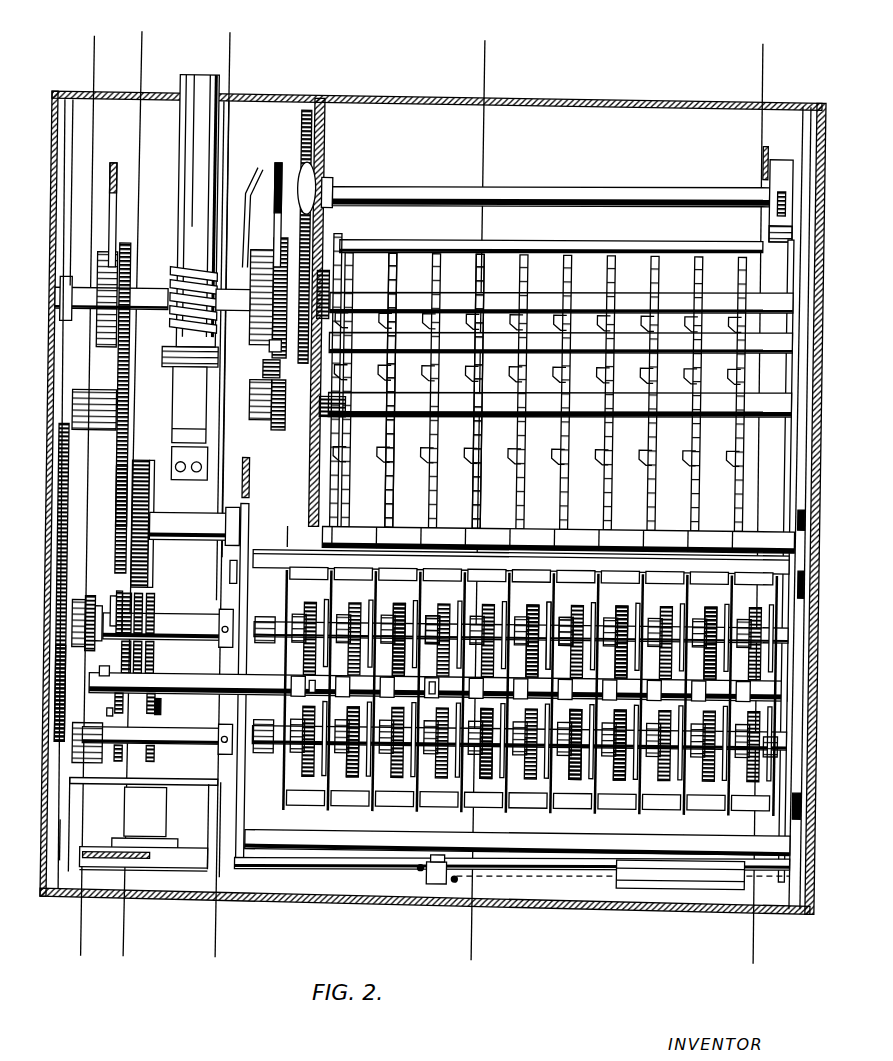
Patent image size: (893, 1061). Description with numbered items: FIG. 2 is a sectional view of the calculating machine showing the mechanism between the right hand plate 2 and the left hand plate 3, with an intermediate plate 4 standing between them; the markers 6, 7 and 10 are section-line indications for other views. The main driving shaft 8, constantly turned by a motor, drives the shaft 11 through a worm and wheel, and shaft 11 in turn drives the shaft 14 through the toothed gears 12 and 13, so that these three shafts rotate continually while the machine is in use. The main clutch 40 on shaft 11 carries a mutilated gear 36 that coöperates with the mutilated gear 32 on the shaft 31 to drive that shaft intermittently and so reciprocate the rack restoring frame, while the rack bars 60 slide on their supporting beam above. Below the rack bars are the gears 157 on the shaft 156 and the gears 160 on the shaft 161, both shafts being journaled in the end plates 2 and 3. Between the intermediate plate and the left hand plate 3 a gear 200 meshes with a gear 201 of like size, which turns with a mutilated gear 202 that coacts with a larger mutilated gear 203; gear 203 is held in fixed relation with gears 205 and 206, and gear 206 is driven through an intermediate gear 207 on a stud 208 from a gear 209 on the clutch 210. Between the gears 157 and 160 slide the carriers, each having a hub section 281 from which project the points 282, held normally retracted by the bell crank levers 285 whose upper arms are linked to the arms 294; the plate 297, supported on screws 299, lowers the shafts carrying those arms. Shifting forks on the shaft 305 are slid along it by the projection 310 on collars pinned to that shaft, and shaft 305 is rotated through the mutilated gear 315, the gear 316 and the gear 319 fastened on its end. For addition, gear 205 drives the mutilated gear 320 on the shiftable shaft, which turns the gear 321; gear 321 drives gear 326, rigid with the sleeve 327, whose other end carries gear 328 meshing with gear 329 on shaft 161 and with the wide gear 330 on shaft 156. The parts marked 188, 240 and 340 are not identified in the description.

The right hand plate 2 is at (803, 476).
The left hand plate 3 is at (72, 482).
The intermediate plate 4 is at (192, 948).
The section line 6- 6 is at (774, 61).
The section line 7- 7 is at (493, 62).
The main driving shaft 8 is at (172, 133).
The section line 10- 10 is at (93, 56).
The shaft 11 is at (143, 56).
The toothed gear 12 is at (130, 400).
The toothed gear 13 is at (294, 133).
The shaft 14 is at (543, 189).
The shaft 31 is at (411, 414).
The mutilated gear 32 is at (269, 422).
The mutilated gear 36 is at (315, 234).
The main clutch 40 is at (264, 354).
The rack bars 60 is at (477, 472).
The shaft 156 is at (174, 626).
The gears 157 is at (396, 603).
The gears 160 is at (352, 768).
The shaft 161 is at (210, 736).
The plate 188 is at (784, 783).
The gear 200 is at (200, 538).
The gear 201 is at (157, 612).
The mutilated gear 202 is at (148, 604).
The mutilated gear 203 is at (151, 591).
The gear 205 is at (152, 505).
The gear 206 is at (118, 506).
The intermediate gear 207 is at (116, 379).
The stud 208 is at (102, 403).
The gear 209 is at (119, 257).
The clutch 210 is at (108, 257).
The lever 240 is at (163, 720).
The hub section 281 is at (477, 770).
The points 282 is at (554, 605).
The bell crank levers 285 is at (432, 603).
The arms 294 is at (418, 576).
The plate 297 is at (257, 562).
The screws 299 is at (231, 575).
The shaft 305 is at (202, 683).
The projection 310 is at (614, 612).
The mutilated gear 315 is at (70, 491).
The gear 316 is at (54, 693).
The gear 319 is at (121, 720).
The mutilated gear 320 is at (132, 602).
The gear 321 is at (114, 611).
The gear 326 is at (153, 719).
The sleeve 327 is at (109, 674).
The gear 328 is at (110, 727).
The gear 329 is at (96, 764).
The gear 330 is at (96, 604).
The pin 340 is at (371, 687).